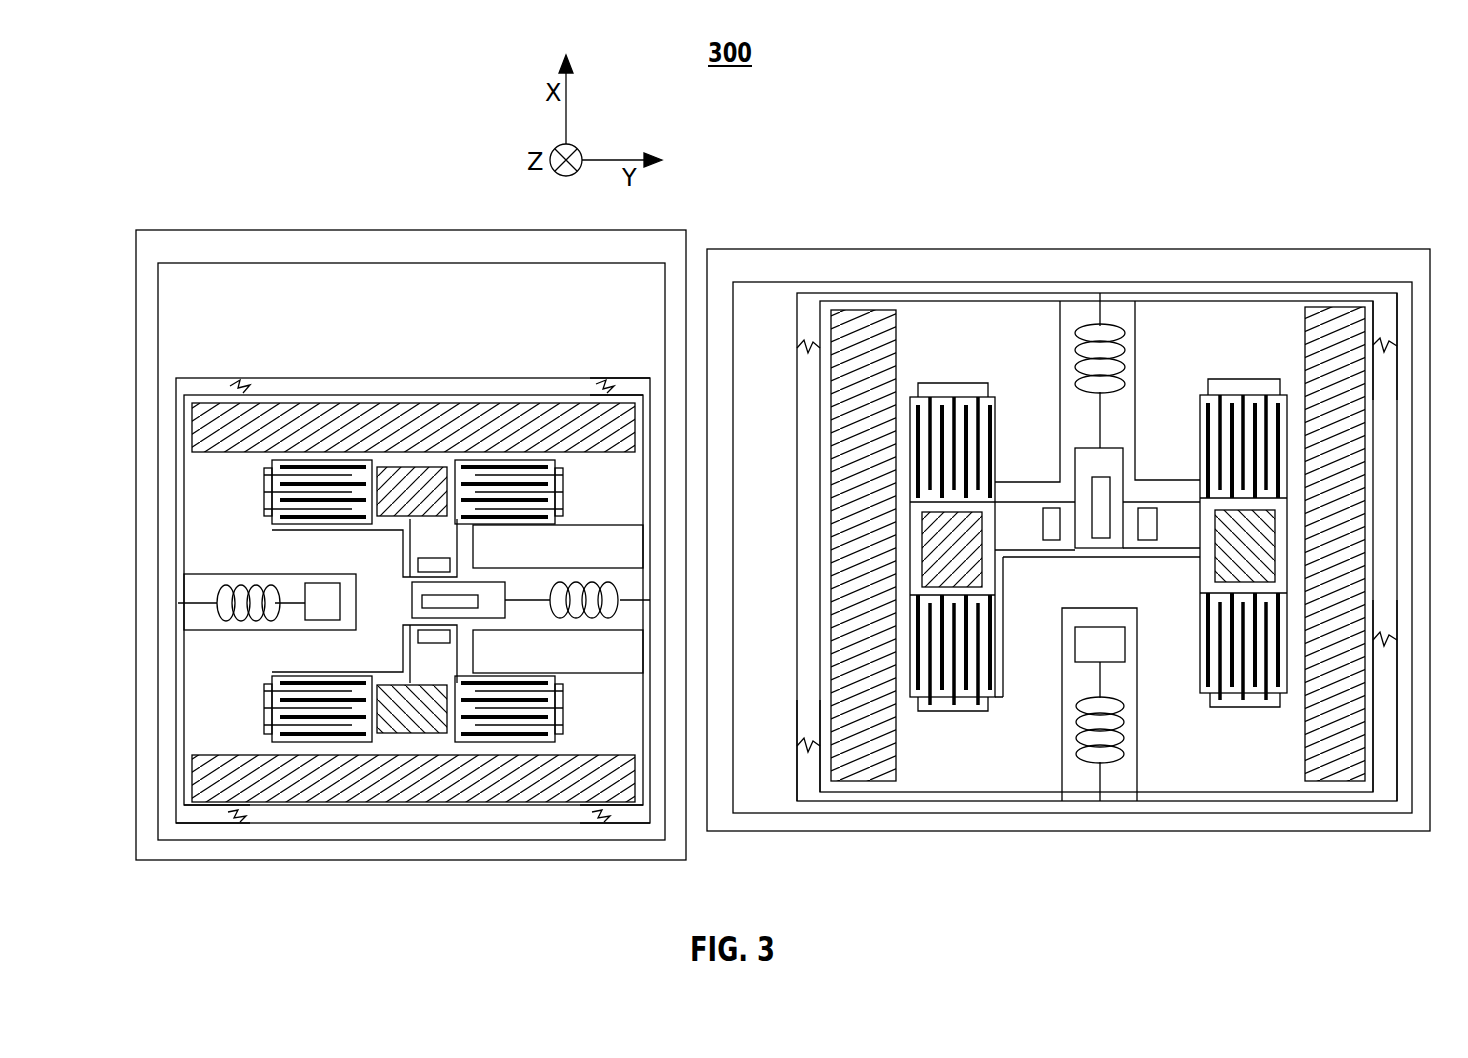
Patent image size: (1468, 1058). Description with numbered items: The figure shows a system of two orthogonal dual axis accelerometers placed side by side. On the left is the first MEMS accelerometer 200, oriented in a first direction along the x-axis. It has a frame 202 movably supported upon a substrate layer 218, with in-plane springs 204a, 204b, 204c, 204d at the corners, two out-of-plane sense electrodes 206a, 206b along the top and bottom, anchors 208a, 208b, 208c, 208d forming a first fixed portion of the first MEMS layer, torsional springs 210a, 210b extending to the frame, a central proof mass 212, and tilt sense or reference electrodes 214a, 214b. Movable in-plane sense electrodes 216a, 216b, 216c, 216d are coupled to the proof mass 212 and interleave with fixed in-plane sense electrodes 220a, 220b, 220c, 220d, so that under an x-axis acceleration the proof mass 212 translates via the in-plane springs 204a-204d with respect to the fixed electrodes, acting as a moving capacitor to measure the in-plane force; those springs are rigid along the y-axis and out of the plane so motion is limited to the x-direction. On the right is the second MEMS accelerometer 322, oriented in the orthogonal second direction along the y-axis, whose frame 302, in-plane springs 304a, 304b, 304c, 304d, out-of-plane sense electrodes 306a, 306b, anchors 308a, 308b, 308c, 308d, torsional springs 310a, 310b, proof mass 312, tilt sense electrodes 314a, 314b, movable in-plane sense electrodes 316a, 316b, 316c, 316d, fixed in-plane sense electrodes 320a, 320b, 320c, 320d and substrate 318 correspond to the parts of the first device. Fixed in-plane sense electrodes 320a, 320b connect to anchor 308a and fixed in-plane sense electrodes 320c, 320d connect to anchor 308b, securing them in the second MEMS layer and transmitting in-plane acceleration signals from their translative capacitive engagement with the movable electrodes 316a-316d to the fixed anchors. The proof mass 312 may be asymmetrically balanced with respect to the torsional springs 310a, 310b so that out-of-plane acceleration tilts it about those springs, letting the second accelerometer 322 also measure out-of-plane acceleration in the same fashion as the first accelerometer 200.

The first MEMS accelerometer 200 is at (199, 192).
The frame 202 is at (207, 263).
The in-plane spring 204a is at (236, 382).
The in-plane spring 204b is at (622, 358).
The in-plane spring 204c is at (234, 818).
The in-plane spring 204d is at (605, 818).
The out-of-plane sense electrode 206a is at (318, 416).
The out-of-plane sense electrode 206b is at (470, 786).
The anchor 208a is at (418, 564).
The anchor 208b is at (418, 638).
The anchor 208c is at (505, 592).
The anchor 208d is at (330, 583).
The torsional spring 210a is at (181, 600).
The torsional spring 210b is at (640, 600).
The proof mass 212 is at (231, 667).
The tilt sense electrode 214a is at (400, 470).
The tilt sense electrode 214b is at (410, 722).
The movable in-plane sense electrode 216a is at (266, 509).
The movable in-plane sense electrode 216b is at (562, 509).
The movable in-plane sense electrode 216c is at (266, 725).
The movable in-plane sense electrode 216d is at (562, 725).
The substrate layer 218 is at (401, 230).
The fixed in-plane sense electrode 220a is at (272, 518).
The fixed in-plane sense electrode 220b is at (563, 463).
The fixed in-plane sense electrode 220c is at (272, 734).
The fixed in-plane sense electrode 220d is at (563, 678).
The frame 302 is at (860, 282).
The in-plane spring 304a is at (805, 750).
The in-plane spring 304b is at (805, 348).
The in-plane spring 304c is at (1386, 650).
The in-plane spring 304d is at (1386, 342).
The out-of-plane sense electrode 306a is at (865, 776).
The out-of-plane sense electrode 306b is at (1340, 771).
The anchor 308a is at (1050, 541).
The anchor 308b is at (1147, 541).
The anchor 308c is at (1123, 462).
The anchor 308d is at (1088, 662).
The torsional spring 310a is at (1097, 802).
The torsional spring 310b is at (1102, 293).
The proof mass 312 is at (1053, 787).
The tilt sense electrode 314a is at (985, 530).
The tilt sense electrode 314b is at (1215, 525).
The movable in-plane sense electrode 316a is at (978, 711).
The movable in-plane sense electrode 316b is at (978, 397).
The movable in-plane sense electrode 316c is at (1265, 707).
The movable in-plane sense electrode 316d is at (1265, 395).
The substrate 318 is at (1020, 249).
The fixed in-plane sense electrode 320a is at (990, 711).
The fixed in-plane sense electrode 320b is at (988, 383).
The fixed in-plane sense electrode 320c is at (1282, 707).
The fixed in-plane sense electrode 320d is at (1208, 379).
The second MEMS accelerometer 322 is at (1309, 153).